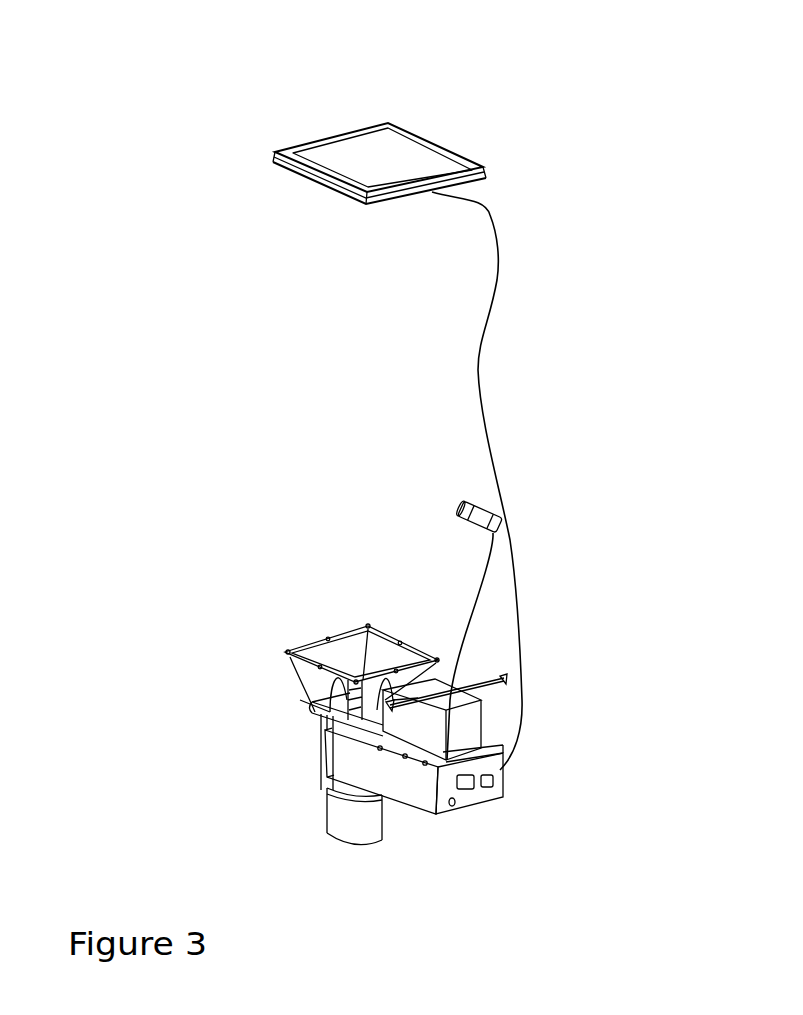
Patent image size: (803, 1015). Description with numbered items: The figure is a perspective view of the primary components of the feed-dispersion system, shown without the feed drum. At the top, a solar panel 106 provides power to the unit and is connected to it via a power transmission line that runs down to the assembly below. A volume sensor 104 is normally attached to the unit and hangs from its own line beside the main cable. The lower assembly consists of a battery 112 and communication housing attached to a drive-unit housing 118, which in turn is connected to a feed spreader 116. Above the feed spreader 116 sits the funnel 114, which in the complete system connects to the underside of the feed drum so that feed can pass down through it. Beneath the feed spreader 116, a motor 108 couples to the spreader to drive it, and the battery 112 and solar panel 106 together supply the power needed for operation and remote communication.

The volume sensor 104 is at (459, 515).
The solar panel 106 is at (398, 155).
The motor 108 is at (353, 822).
The battery 112 is at (467, 728).
The funnel 114 is at (308, 685).
The feed spreader 116 is at (325, 747).
The drive-unit housing 118 is at (397, 780).